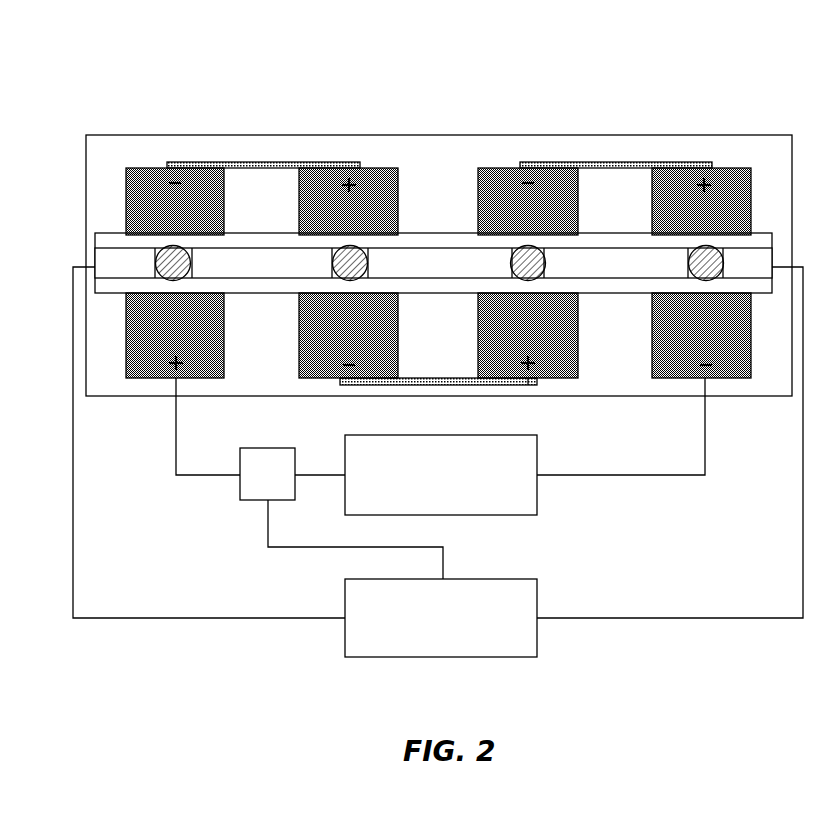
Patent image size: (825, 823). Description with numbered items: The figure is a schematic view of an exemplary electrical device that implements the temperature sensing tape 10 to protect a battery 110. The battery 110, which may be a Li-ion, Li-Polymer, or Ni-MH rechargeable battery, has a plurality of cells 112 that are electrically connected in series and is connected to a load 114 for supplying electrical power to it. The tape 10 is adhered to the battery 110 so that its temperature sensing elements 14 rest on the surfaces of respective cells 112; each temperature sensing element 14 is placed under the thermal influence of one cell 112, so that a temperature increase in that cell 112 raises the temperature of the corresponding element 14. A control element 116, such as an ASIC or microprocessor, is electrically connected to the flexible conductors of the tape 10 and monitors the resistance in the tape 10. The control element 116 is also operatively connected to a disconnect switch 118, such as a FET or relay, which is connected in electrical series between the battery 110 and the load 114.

The tape 10 is at (443, 223).
The temperature sensing element 14 is at (190, 270).
The battery 110 is at (217, 82).
The cell 112 is at (147, 180).
The load 114 is at (441, 475).
The control element 116 is at (441, 618).
The disconnect switch 118 is at (267, 474).